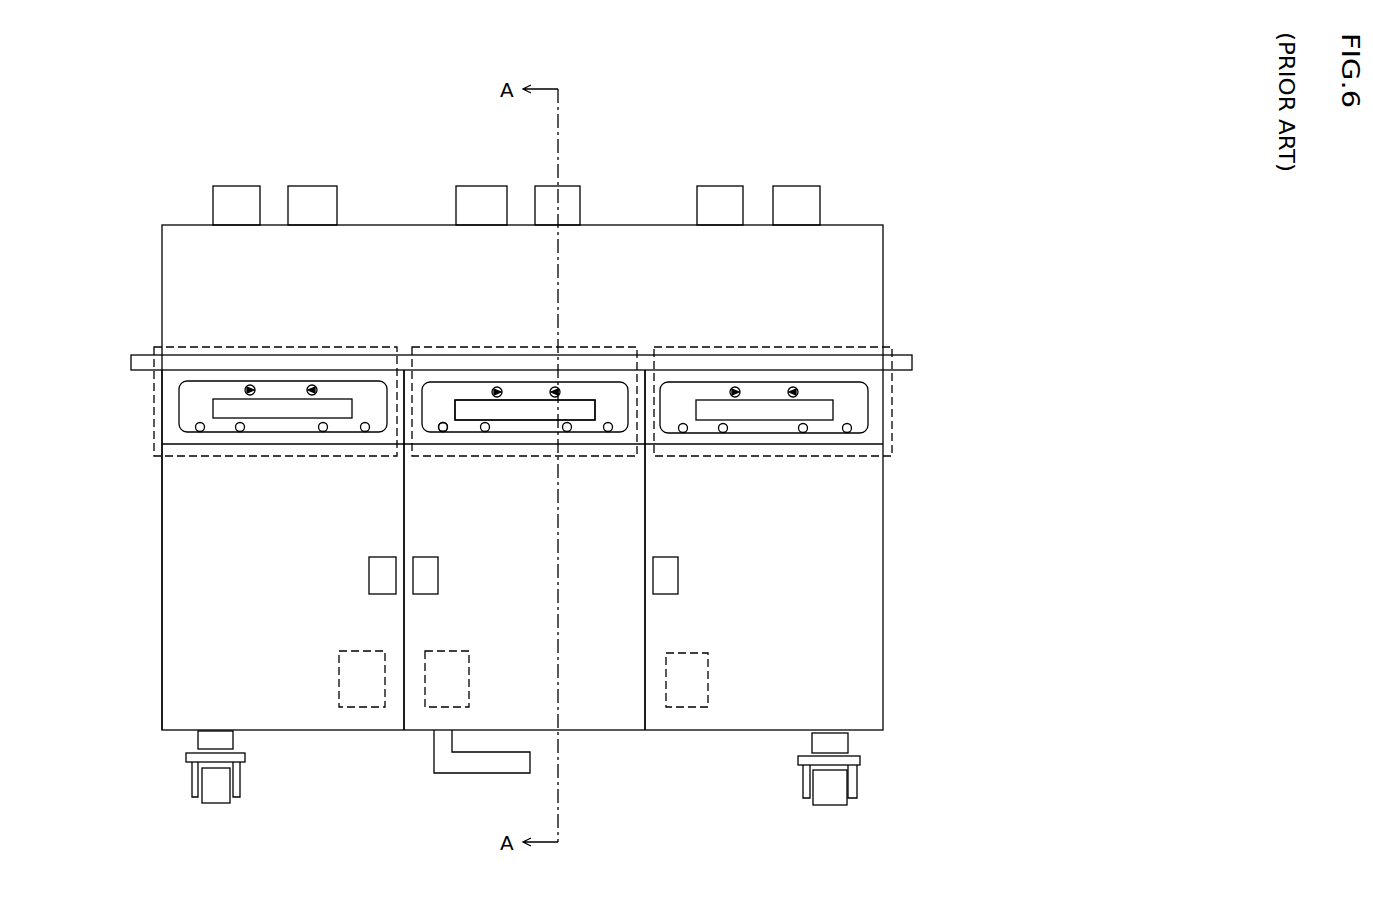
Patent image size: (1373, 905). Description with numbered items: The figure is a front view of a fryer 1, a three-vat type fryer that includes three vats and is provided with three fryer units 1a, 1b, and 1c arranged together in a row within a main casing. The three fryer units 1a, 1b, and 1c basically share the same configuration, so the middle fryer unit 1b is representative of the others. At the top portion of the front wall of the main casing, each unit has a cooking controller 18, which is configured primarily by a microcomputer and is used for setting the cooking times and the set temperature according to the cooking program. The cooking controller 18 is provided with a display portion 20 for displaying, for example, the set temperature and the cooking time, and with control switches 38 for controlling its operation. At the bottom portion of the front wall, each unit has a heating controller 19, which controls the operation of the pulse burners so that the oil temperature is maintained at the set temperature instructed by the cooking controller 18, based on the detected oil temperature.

The fryer 1 is at (645, 137).
The fryer unit 1a is at (253, 320).
The fryer unit 1b is at (500, 318).
The fryer unit 1c is at (738, 329).
The cooking controller 18 is at (327, 347).
The heating controller 19 is at (350, 707).
The display portion 20 is at (582, 420).
The control switches 38 is at (447, 431).